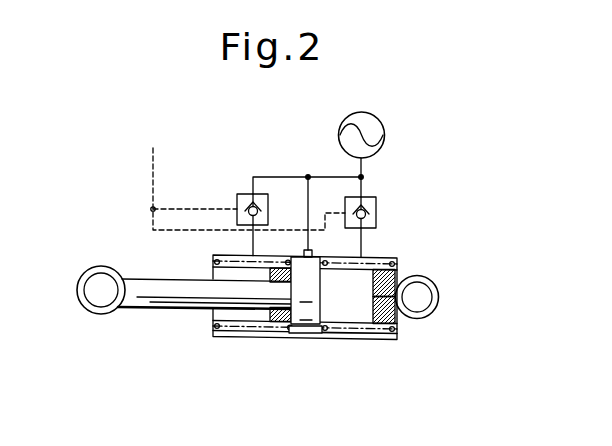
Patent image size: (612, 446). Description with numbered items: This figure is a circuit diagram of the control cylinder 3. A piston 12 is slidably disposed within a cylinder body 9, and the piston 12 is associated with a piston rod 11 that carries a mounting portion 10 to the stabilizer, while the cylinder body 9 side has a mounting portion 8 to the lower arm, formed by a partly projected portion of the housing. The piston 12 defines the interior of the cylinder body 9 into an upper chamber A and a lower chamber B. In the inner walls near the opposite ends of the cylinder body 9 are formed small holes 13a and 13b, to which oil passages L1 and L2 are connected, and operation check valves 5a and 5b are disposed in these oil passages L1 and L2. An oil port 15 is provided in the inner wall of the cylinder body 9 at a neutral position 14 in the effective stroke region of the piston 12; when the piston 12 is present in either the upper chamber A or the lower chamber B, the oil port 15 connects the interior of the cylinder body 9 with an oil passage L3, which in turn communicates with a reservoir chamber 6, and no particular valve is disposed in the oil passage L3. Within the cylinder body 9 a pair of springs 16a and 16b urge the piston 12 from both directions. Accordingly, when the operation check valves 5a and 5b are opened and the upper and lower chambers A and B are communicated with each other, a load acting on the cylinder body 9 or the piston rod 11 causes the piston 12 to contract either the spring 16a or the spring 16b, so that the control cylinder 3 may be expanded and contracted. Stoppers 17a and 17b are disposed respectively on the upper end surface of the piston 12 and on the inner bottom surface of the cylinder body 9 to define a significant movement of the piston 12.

The control cylinder 3 is at (209, 338).
The operation check valve 5a is at (238, 195).
The operation check valve 5b is at (376, 213).
The reservoir chamber 6 is at (381, 136).
The mounting portion 8 is at (433, 317).
The cylinder body 9 is at (333, 339).
The mounting portion 10 is at (89, 309).
The piston rod 11 is at (153, 311).
The piston 12 is at (295, 339).
The small hole 13a is at (247, 256).
The small hole 13b is at (372, 258).
The neutral position 14 is at (305, 347).
The oil port 15 is at (313, 249).
The spring 16a is at (216, 338).
The spring 16b is at (383, 342).
The stopper 17a is at (273, 339).
The stopper 17b is at (375, 340).
The upper chamber A is at (189, 346).
The lower chamber B is at (355, 305).
The oil passage L1 is at (266, 176).
The oil passage L2 is at (362, 183).
The oil passage L3 is at (307, 206).